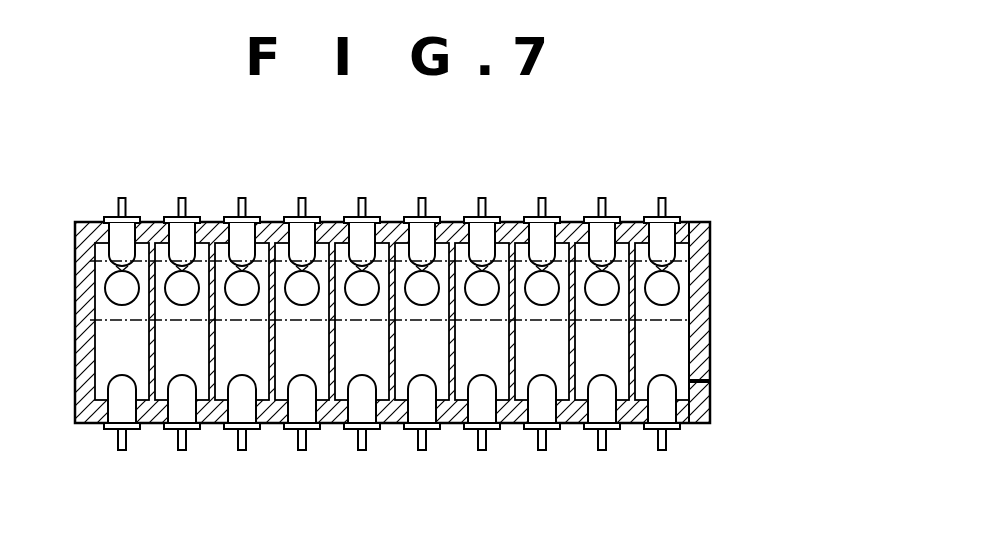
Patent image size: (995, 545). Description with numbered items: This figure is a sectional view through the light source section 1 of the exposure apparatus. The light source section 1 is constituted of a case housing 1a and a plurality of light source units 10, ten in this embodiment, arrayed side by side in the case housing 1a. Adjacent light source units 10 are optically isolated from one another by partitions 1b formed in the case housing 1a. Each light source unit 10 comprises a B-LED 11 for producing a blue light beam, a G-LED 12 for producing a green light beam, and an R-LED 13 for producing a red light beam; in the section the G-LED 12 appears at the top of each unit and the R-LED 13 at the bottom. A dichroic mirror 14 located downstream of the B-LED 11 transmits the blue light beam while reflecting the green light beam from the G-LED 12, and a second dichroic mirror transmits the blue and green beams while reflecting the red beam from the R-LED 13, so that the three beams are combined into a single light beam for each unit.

The light source section 1 is at (443, 330).
The case housing 1a is at (702, 388).
The partition 1b is at (694, 385).
The light source unit 10 is at (705, 333).
The B-LED 11 is at (693, 258).
The G-LED 12 is at (652, 238).
The R-LED 13 is at (642, 414).
The dichroic mirror 14 is at (692, 302).